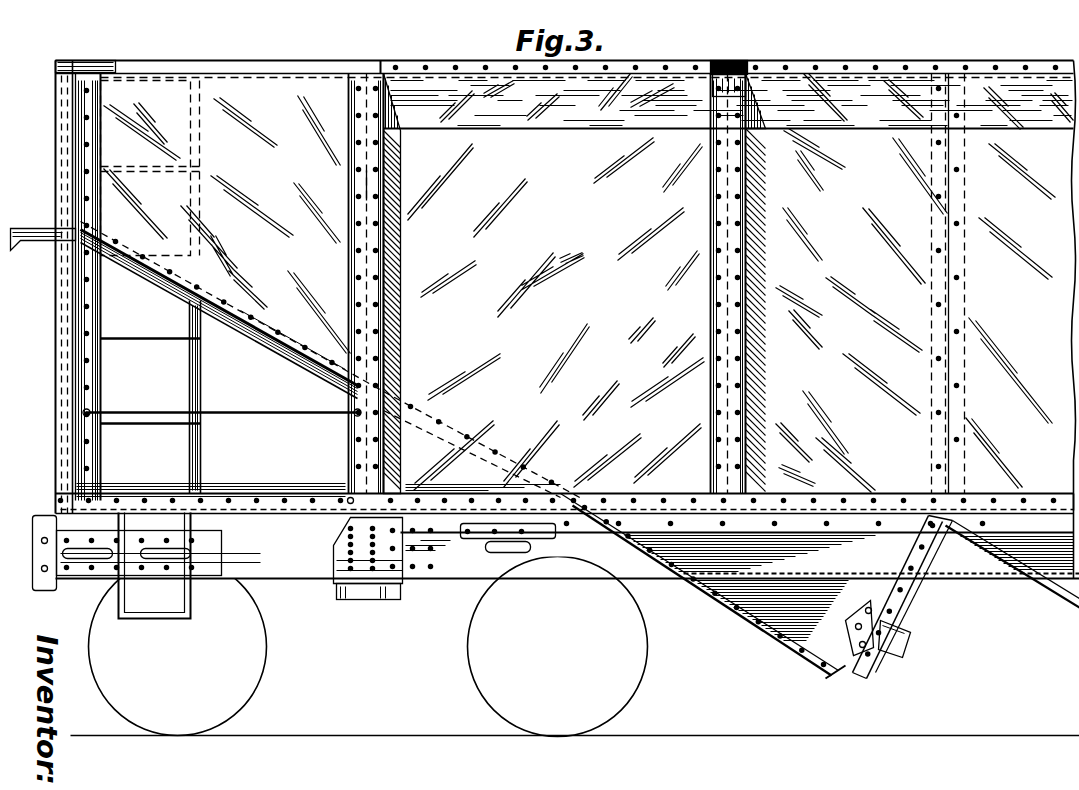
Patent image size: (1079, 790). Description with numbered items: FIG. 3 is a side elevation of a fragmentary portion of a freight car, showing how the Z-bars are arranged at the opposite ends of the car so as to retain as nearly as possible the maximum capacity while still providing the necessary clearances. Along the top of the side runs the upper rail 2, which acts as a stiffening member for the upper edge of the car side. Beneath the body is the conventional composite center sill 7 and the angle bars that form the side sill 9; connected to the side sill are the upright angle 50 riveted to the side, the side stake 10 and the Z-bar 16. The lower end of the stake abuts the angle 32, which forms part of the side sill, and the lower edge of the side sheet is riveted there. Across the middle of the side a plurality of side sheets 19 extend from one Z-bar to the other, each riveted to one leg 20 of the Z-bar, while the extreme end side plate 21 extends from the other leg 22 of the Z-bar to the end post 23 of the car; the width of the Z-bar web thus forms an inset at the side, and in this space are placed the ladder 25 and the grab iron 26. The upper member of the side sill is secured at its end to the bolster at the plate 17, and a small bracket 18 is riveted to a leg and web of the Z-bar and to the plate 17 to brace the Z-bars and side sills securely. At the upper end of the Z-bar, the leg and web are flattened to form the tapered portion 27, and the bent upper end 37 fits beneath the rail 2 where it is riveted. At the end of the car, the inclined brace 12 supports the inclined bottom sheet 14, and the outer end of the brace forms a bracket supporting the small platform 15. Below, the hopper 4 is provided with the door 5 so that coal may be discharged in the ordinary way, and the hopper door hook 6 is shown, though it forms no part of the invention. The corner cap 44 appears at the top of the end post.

The upper rail 2 is at (870, 62).
The hopper 4 is at (770, 594).
The door 5 is at (912, 601).
The hopper door hook 6 is at (905, 632).
The center sill 7 is at (470, 560).
The side sill 9 is at (637, 517).
The side stake 10 is at (728, 300).
The inclined brace 12 is at (44, 248).
The inclined bottom sheet 14 is at (266, 322).
The small platform 15 is at (38, 227).
The Z-bar 16 is at (360, 269).
The plate 17 is at (342, 538).
The small bracket 18 is at (350, 496).
The side sheet 19 is at (732, 311).
The leg of the Z-bar 20 is at (374, 186).
The extreme end side plate 21 is at (226, 217).
The leg of the Z-bar 22 is at (356, 184).
The end post 23 is at (82, 158).
The ladder 25 is at (197, 381).
The grab iron 26 is at (282, 415).
The tapered portion 27 is at (382, 64).
The angle 32 is at (812, 503).
The bent upper end 37 is at (745, 66).
The corner cap 44 is at (60, 64).
The upright angle 50 is at (969, 284).